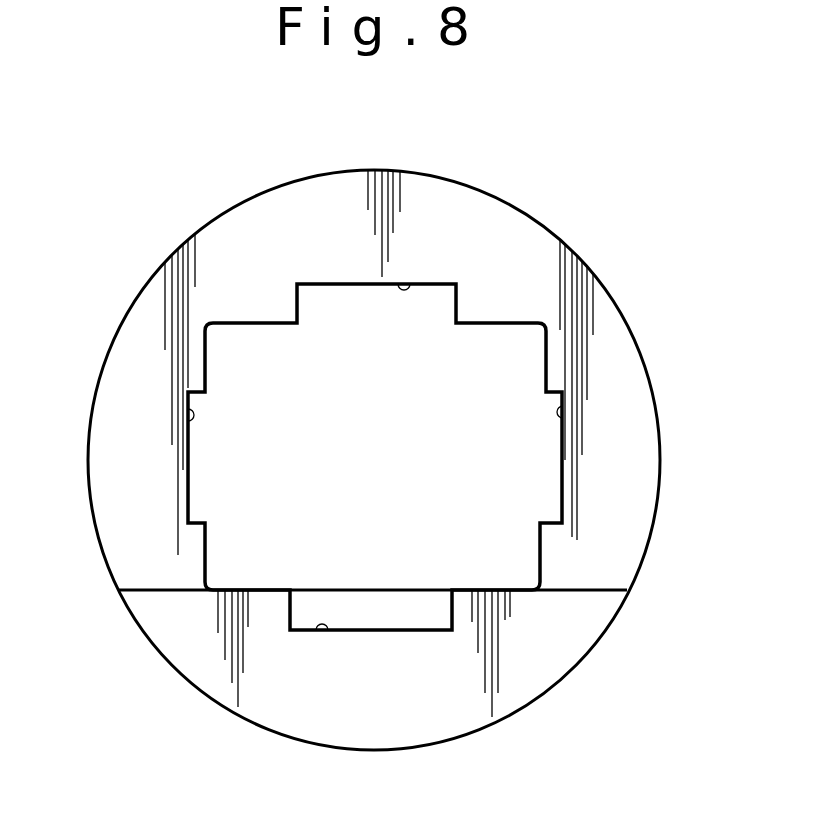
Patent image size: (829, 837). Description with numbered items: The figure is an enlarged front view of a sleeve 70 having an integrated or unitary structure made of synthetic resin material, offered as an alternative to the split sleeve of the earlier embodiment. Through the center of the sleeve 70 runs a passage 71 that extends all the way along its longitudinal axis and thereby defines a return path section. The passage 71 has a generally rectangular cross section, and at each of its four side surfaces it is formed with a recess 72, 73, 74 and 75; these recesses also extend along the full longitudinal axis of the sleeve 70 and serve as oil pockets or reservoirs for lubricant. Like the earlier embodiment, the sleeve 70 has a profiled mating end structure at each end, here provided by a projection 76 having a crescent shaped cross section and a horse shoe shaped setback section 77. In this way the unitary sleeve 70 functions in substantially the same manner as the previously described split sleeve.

The sleeve 70 is at (520, 232).
The passage 71 is at (503, 467).
The recess 72 is at (563, 418).
The recess 73 is at (412, 284).
The recess 74 is at (188, 421).
The recess 75 is at (327, 632).
The projection 76 is at (488, 693).
The horse shoe shaped setback section 77 is at (193, 253).